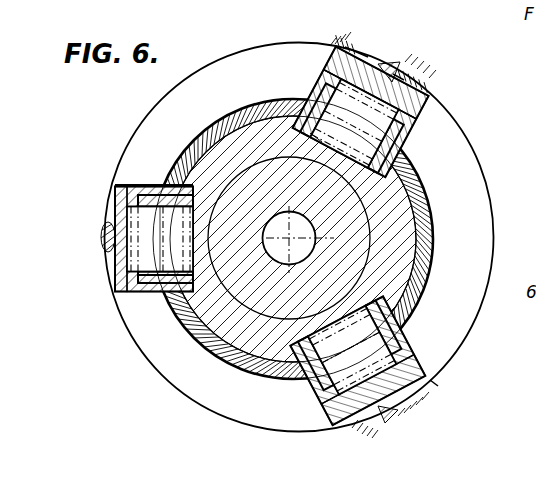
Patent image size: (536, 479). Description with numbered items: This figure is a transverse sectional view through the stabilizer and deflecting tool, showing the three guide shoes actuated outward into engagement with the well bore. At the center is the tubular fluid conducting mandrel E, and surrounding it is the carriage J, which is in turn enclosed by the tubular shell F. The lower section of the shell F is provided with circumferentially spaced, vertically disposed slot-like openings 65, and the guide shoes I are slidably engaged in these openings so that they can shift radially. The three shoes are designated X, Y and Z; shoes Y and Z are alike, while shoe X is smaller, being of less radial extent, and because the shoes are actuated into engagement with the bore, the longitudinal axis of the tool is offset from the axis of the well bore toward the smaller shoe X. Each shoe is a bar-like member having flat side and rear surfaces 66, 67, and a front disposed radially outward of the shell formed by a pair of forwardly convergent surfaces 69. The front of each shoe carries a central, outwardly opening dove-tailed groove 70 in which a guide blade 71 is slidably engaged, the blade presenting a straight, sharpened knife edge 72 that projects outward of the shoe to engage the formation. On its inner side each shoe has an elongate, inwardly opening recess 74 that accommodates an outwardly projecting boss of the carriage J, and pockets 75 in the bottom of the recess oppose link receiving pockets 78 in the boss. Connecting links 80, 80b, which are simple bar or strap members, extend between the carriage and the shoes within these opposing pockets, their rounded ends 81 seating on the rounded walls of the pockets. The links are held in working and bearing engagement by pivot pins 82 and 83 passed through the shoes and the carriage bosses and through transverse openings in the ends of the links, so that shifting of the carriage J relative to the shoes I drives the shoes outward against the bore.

The slot-like openings 65 is at (416, 140).
The side surfaces 66 is at (328, 70).
The rear surface 67 is at (295, 112).
The forwardly convergent surfaces 69 is at (360, 48).
The dove-tailed groove 70 is at (382, 418).
The guide blade 71 is at (403, 402).
The knife edge 72 is at (396, 419).
The recesses 74 is at (152, 290).
The pockets 75 is at (143, 281).
The link receiving pockets 78 is at (311, 382).
The connecting links 80 is at (147, 213).
The piston bore (lower block) 80b is at (367, 343).
The rounded ends 81 is at (101, 226).
The pivot pin 82 is at (441, 90).
The pivot pin 83 is at (312, 137).
The mandrel E is at (354, 200).
The carriage J is at (400, 230).
The shell F is at (440, 266).
The guide shoes I is at (357, 42).
The shoe Y is at (396, 72).
The shoe X is at (113, 186).
The shoe Z is at (436, 383).